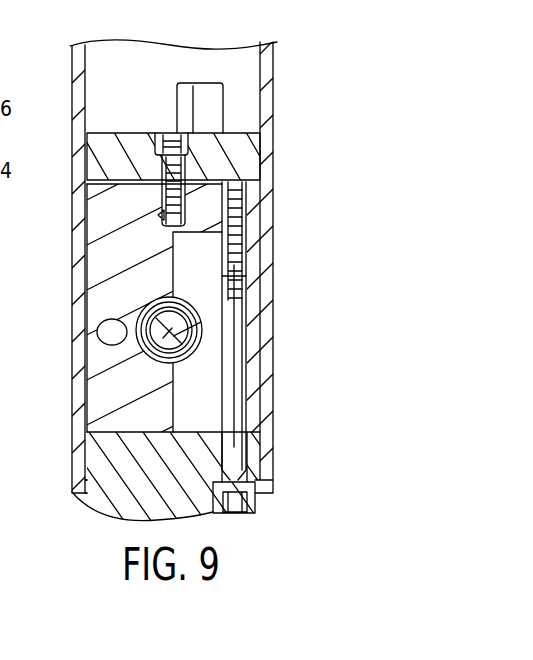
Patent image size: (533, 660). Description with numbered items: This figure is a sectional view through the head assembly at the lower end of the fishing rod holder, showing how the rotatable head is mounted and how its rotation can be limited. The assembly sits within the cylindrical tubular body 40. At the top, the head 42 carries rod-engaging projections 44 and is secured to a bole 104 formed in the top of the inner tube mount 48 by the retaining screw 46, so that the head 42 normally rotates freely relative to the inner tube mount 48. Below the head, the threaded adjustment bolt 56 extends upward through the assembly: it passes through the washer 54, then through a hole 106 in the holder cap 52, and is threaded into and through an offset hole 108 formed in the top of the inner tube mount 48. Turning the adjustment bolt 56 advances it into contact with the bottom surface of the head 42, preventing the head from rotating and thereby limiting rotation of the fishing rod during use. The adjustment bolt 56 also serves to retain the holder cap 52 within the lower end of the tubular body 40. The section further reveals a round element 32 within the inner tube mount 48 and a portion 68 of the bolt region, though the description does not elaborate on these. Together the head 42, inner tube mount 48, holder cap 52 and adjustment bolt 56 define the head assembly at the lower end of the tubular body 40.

The roller 32 is at (150, 360).
The cylindrical tubular body 40 is at (267, 203).
The head 42 is at (240, 152).
The rod-engaging projections 44 is at (210, 114).
The retaining screw 46 is at (168, 143).
The inner tube mount 48 is at (98, 260).
The holder cap 52 is at (137, 497).
The washer 54 is at (242, 488).
The threaded adjustment bolt 56 is at (230, 337).
The rod portion 68 is at (228, 283).
The bole 104 is at (95, 237).
The hole 106 is at (88, 480).
The offset hole 108 is at (240, 249).